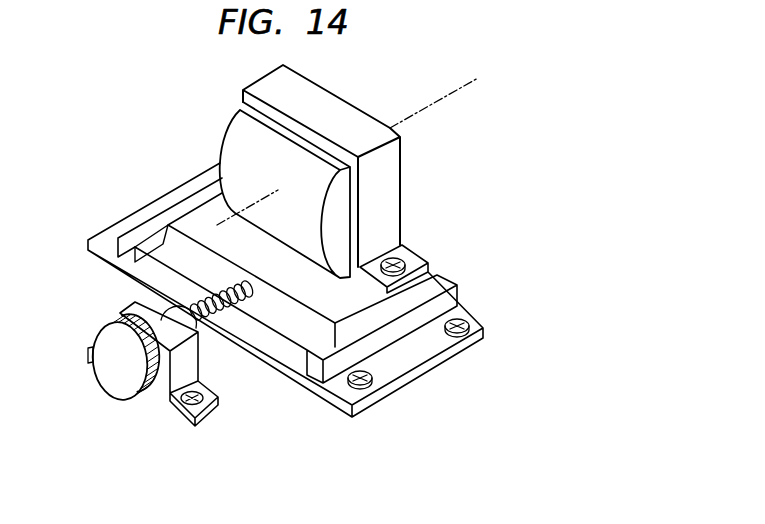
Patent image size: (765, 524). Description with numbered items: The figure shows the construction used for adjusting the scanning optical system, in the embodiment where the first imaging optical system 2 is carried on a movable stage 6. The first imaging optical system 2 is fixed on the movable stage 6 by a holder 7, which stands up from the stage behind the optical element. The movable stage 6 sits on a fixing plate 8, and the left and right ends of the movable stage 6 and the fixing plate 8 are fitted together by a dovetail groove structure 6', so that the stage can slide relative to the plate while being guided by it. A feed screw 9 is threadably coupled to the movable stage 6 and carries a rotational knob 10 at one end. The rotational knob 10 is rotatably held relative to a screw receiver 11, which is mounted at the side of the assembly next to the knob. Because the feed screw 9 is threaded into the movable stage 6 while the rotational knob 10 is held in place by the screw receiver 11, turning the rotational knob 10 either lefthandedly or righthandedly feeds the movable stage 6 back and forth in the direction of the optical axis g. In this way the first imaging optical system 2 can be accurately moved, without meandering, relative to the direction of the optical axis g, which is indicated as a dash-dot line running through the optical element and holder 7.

The first imaging optical system 2 is at (235, 125).
The movable stage 6 is at (226, 235).
The dovetail groove structure 6' is at (149, 219).
The holder 7 is at (315, 90).
The fixing plate 8 is at (440, 287).
The feed screw 9 is at (215, 315).
The rotational knob 10 is at (100, 336).
The screw receiver 11 is at (188, 367).
The optical axis g is at (450, 93).